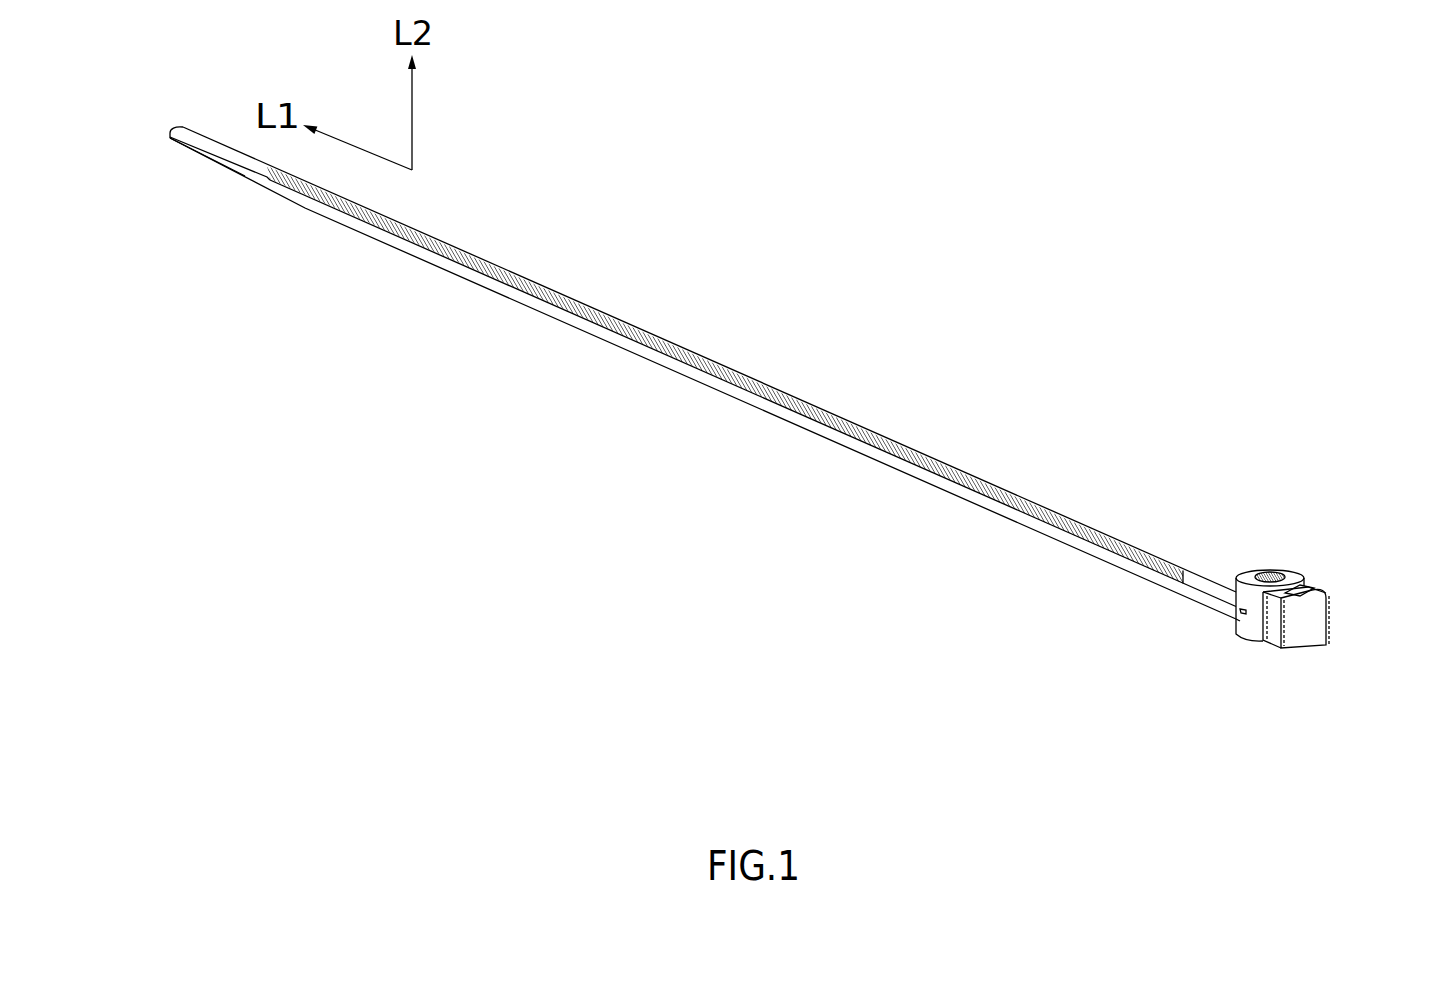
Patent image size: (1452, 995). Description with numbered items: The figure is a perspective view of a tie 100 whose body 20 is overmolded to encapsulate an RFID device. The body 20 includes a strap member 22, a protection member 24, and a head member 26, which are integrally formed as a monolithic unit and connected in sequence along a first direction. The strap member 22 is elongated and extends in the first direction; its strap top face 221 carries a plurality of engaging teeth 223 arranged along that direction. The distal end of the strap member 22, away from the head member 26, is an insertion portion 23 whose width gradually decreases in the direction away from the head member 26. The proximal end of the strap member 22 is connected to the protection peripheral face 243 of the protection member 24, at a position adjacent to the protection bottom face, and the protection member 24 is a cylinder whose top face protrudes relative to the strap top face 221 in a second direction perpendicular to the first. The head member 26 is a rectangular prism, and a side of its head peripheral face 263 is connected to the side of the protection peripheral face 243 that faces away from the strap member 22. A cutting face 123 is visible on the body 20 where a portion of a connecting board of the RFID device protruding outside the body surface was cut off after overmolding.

The tie 100 is at (1058, 152).
The body 20 is at (1053, 428).
The strap member 22 is at (848, 410).
The strap top face 221 is at (1185, 584).
The engaging teeth 223 is at (522, 273).
The insertion portion 23 is at (240, 157).
The protection member 24 is at (1243, 566).
The protection peripheral face 243 is at (1243, 598).
The cutting face 123 is at (1240, 617).
The head member 26 is at (1322, 574).
The head peripheral face 263 is at (1313, 630).